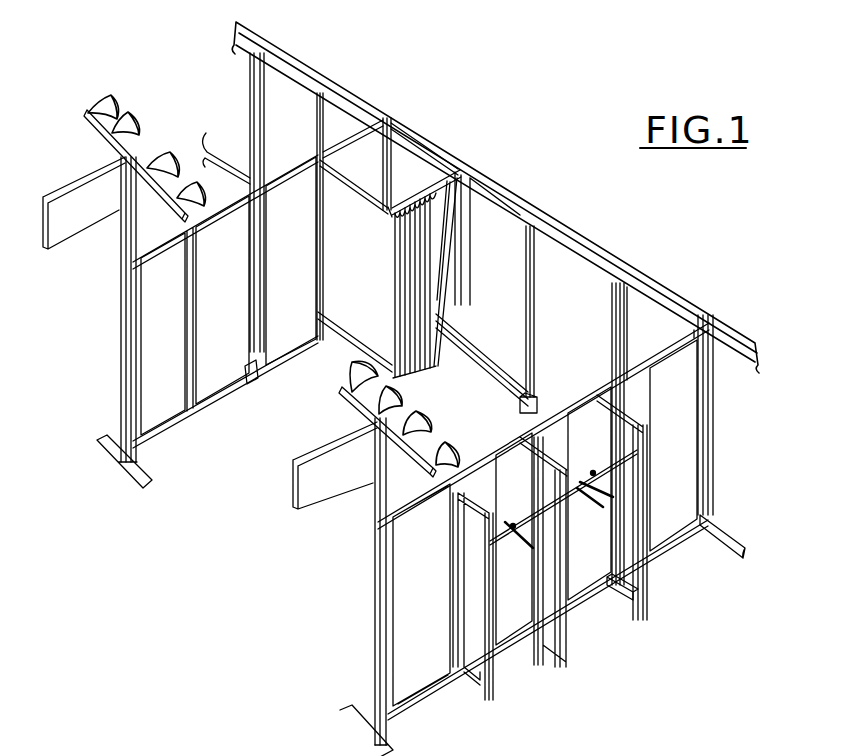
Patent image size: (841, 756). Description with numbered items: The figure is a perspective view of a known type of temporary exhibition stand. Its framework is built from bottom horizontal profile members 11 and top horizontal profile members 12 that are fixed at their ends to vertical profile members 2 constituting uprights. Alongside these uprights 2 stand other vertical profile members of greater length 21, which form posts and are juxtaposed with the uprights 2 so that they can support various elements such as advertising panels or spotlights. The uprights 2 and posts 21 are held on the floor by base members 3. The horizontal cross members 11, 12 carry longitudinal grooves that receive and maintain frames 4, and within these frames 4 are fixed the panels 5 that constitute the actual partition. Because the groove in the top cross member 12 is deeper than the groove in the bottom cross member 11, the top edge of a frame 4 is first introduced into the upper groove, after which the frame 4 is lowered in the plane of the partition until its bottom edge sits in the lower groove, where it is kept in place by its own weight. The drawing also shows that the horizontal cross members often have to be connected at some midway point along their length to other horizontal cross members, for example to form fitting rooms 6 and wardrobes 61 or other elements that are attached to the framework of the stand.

The vertical profile member 2 is at (385, 157).
The post 21 is at (377, 633).
The base member 3 is at (108, 452).
The frame 4 is at (617, 297).
The panel 5 is at (230, 348).
The fitting room 6 is at (430, 173).
The wardrobe 61 is at (640, 588).
The bottom horizontal profile member 11 is at (484, 366).
The top horizontal profile member 12 is at (350, 133).